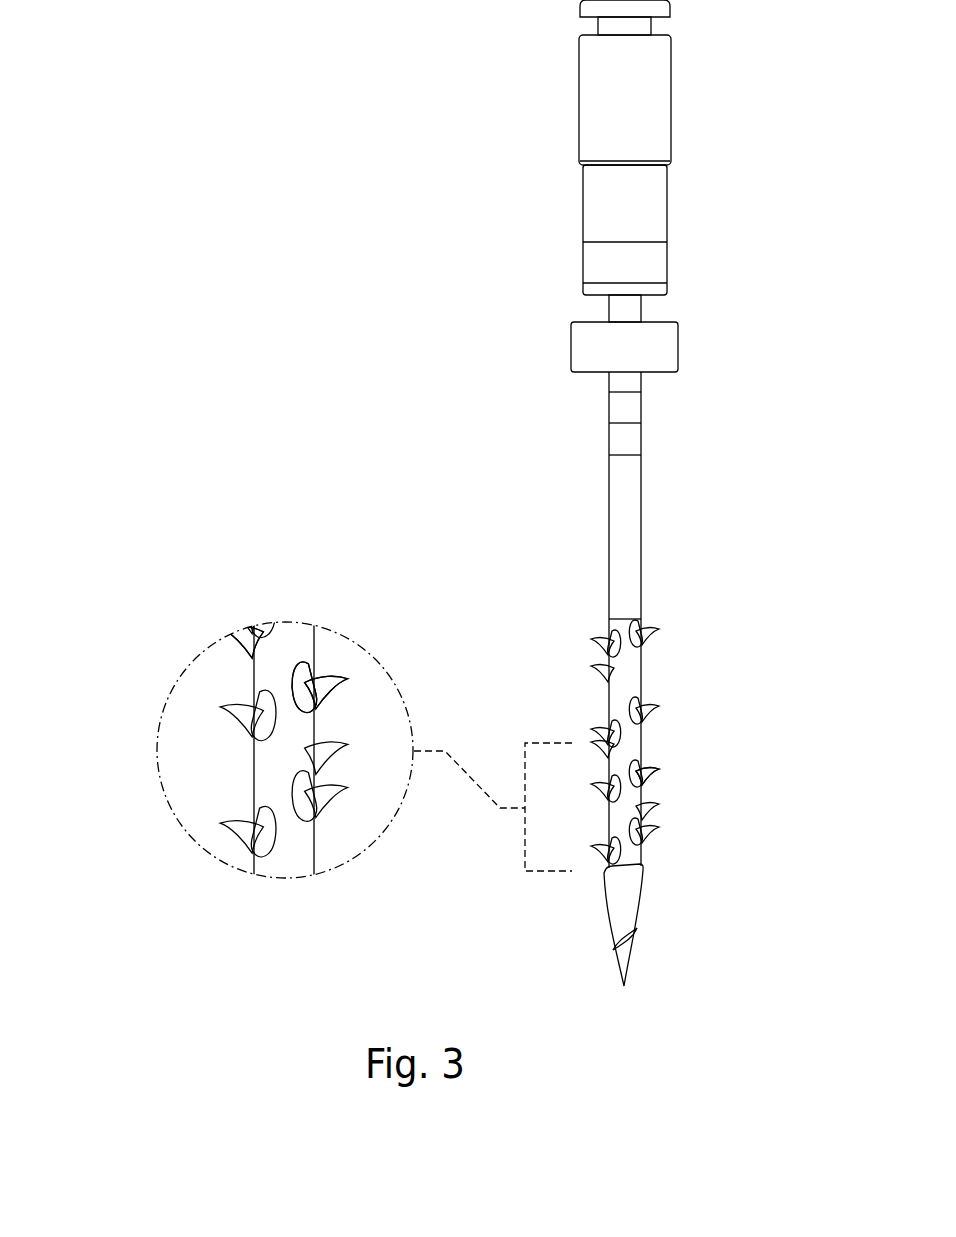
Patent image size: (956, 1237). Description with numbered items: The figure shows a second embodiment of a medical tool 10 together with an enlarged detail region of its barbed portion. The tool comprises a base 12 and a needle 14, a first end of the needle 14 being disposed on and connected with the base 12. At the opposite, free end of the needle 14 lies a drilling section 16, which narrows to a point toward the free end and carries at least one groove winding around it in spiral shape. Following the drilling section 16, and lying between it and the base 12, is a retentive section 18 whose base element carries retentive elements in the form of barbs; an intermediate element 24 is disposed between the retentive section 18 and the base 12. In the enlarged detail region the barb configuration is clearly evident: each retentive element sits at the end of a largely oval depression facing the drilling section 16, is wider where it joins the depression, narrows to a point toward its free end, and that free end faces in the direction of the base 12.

The medical tool 10 is at (215, 115).
The base 12 is at (543, 130).
The needle 14 is at (415, 482).
The drilling section 16 is at (590, 913).
The retentive section 18 is at (573, 638).
The intermediate element 24 is at (573, 436).